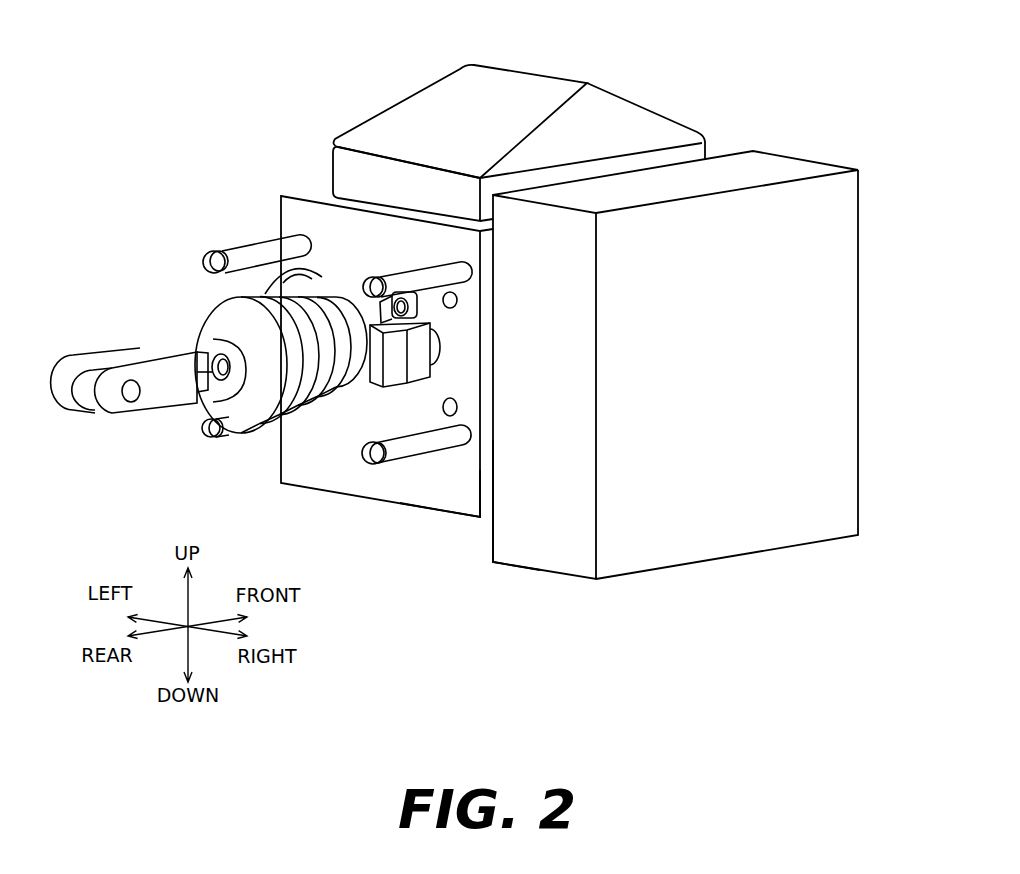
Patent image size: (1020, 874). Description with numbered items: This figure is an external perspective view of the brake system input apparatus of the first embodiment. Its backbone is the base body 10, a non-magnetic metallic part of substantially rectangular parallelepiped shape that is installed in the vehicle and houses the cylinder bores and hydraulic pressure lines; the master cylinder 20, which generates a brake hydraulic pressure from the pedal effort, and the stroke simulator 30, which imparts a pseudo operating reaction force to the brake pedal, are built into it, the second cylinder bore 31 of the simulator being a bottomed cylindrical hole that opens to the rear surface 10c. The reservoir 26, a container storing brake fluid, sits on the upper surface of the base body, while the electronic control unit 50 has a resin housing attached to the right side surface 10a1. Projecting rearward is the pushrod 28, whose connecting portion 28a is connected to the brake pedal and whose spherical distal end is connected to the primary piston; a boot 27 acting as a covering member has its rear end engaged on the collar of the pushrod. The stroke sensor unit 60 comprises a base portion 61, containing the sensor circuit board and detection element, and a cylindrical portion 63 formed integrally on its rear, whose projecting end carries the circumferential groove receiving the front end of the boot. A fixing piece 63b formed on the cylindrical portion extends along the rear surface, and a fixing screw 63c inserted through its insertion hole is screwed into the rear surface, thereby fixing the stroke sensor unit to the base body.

The base body 10 is at (247, 197).
The right side surface 10a1 is at (487, 478).
The rear surface 10c is at (462, 492).
The master cylinder 20 is at (312, 435).
The reservoir 26 is at (525, 85).
The boot 27 is at (250, 403).
The pushrod 28 is at (203, 336).
The connecting portion 28a is at (147, 403).
The stroke simulator 30 is at (244, 287).
The second cylinder bore 31 is at (268, 292).
The electronic control unit 50 is at (780, 132).
The stroke sensor unit 60 is at (426, 401).
The base portion 61 is at (393, 362).
The cylindrical portion 63 is at (363, 393).
The fixing piece 63b is at (417, 305).
The fixing screw 63c is at (398, 290).